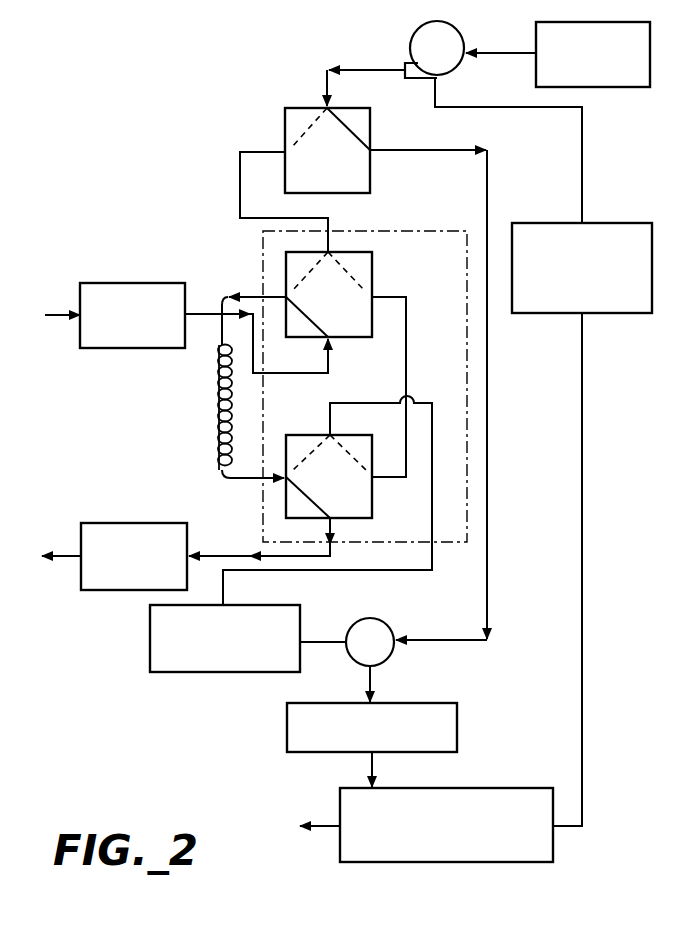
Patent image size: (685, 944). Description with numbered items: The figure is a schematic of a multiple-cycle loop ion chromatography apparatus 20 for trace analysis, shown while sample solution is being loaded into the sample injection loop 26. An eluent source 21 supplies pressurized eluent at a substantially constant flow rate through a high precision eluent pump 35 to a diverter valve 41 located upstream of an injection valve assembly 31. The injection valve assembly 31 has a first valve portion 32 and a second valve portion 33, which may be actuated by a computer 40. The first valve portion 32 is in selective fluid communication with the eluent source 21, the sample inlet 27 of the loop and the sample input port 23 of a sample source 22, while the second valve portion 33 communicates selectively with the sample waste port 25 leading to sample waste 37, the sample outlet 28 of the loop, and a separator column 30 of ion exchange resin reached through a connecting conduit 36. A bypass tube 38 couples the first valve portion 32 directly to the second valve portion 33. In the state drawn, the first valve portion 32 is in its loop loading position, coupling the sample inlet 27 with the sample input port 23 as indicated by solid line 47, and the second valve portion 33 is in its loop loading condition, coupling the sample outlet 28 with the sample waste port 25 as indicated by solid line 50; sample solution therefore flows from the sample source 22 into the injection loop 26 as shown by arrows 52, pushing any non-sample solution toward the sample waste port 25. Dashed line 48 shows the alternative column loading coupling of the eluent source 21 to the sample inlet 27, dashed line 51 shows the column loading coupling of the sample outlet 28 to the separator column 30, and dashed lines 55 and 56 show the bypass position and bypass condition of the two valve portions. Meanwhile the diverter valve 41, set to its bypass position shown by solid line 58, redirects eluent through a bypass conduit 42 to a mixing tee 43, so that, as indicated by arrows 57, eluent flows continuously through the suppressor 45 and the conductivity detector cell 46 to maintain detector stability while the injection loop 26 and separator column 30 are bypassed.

The chromatographic separation apparatus 20 is at (132, 80).
The eluent source 21 is at (594, 88).
The sample source 22 is at (133, 283).
The sample input port 23 is at (277, 373).
The sample waste port 25 is at (240, 555).
The sample injection loop 26 is at (217, 407).
The sample inlet 27 is at (252, 293).
The sample outlet 28 is at (233, 480).
The separator column 30 is at (240, 605).
The injection valve assembly 31 is at (405, 220).
The first valve portion 32 is at (323, 309).
The second valve portion 33 is at (351, 469).
The eluent pump 35 is at (462, 62).
The connecting conduit 36 is at (438, 404).
The sample waste 37 is at (137, 522).
The bypass tube 38 is at (406, 335).
The computer 40 is at (600, 223).
The diverter valve 41 is at (351, 165).
The bypass conduit 42 is at (489, 188).
The mixing tee 43 is at (390, 663).
The suppressor 45 is at (457, 723).
The detector 46 is at (385, 788).
The solid line 47 is at (313, 312).
The solid line 48 is at (300, 275).
The solid line 50 is at (338, 513).
The solid line 51 is at (310, 433).
The arrows 52 is at (200, 312).
The solid line 55 is at (372, 263).
The solid line 56 is at (352, 432).
The arrows 57 is at (413, 150).
The solid line 58 is at (350, 128).